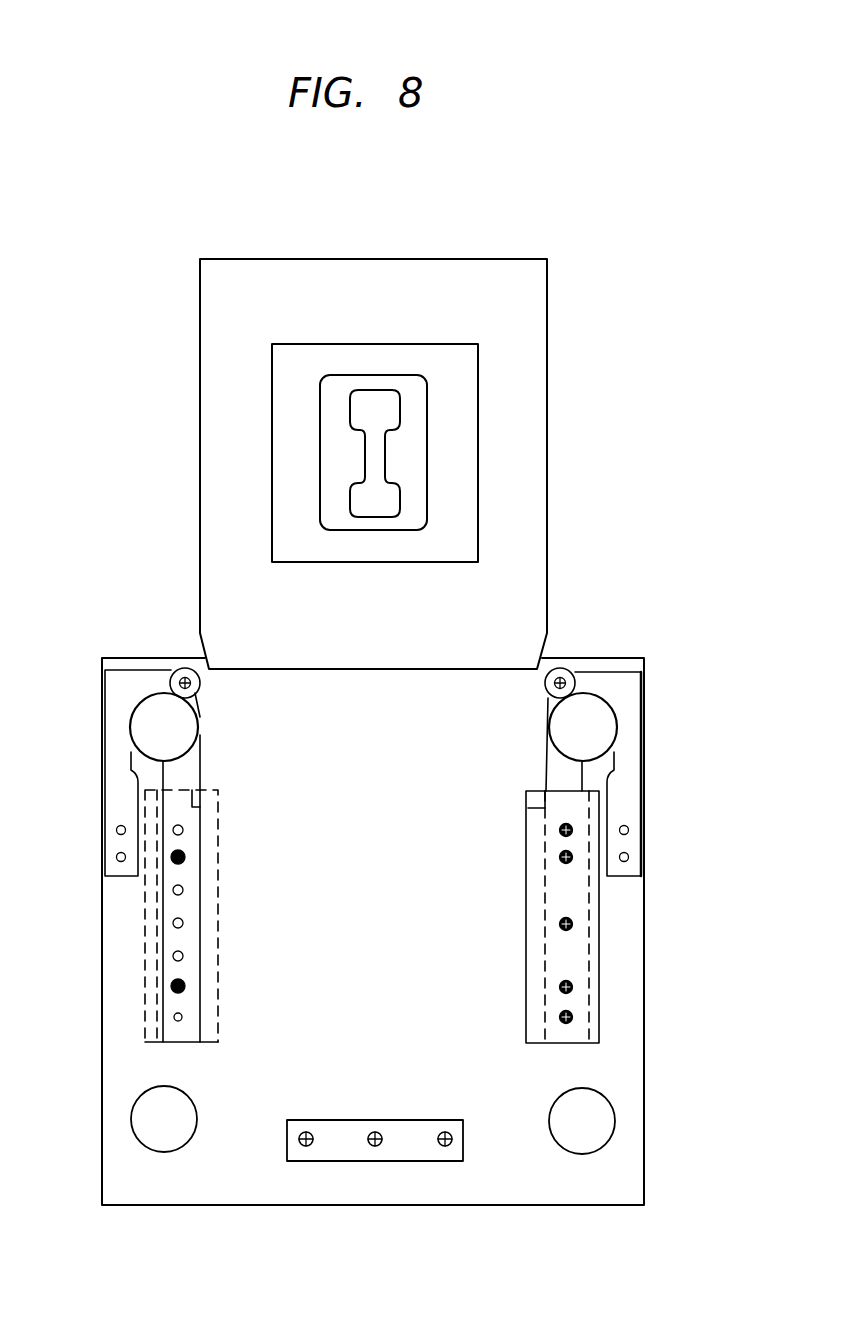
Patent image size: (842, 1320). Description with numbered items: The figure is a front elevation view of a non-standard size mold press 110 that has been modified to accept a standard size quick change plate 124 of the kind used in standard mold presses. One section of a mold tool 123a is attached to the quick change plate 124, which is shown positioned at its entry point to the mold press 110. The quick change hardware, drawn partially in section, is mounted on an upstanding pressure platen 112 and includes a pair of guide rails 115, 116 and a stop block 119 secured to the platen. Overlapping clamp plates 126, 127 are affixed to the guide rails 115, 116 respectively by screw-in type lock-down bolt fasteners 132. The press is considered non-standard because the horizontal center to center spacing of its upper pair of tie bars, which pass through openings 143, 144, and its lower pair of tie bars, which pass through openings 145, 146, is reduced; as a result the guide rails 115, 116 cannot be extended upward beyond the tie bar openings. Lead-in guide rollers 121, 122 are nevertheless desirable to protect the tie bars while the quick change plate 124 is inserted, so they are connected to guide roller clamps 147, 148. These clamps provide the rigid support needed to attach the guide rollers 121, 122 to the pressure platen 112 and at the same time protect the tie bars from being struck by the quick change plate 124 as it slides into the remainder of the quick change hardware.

The mold press 110 is at (382, 212).
The upstanding pressure platen 112 is at (620, 658).
The guide rail 115 is at (202, 765).
The guide rail 116 is at (550, 763).
The stop block 119 is at (368, 1120).
The lead-in guide roller 121 is at (184, 665).
The lead-in guide roller 122 is at (562, 662).
The mold tool section 123a is at (418, 343).
The quick change plate 124 is at (498, 259).
The clamp plate 126 is at (218, 966).
The clamp plate 127 is at (593, 980).
The lock-down bolt fasteners 132 is at (560, 830).
The opening 143 is at (148, 738).
The opening 144 is at (600, 740).
The opening 145 is at (150, 1131).
The opening 146 is at (605, 1122).
The guide roller clamp 147 is at (628, 690).
The guide roller clamp 148 is at (118, 678).